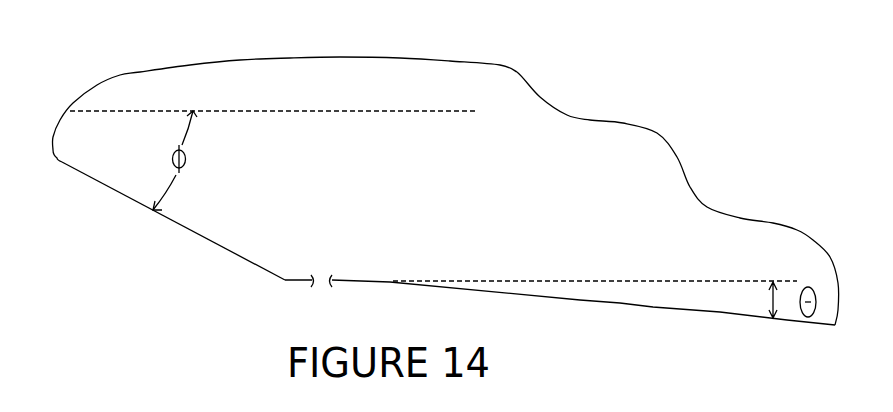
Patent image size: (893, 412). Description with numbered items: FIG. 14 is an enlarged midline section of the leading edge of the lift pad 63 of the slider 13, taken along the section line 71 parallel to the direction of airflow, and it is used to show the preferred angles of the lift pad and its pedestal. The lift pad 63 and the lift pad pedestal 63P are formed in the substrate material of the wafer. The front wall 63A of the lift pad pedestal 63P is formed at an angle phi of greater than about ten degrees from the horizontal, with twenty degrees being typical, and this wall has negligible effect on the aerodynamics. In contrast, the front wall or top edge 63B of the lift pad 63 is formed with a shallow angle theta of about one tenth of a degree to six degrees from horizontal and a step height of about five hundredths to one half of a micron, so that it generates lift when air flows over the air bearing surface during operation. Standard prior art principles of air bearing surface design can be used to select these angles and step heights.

The slider 13 is at (97, 243).
The lift pad 63 is at (688, 294).
The front wall of the lift pad pedestal 63A is at (232, 257).
The front wall (top edge) of the lift pad 63B is at (688, 313).
The lift pad pedestal 63P is at (665, 165).
The section line 71 is at (138, 45).